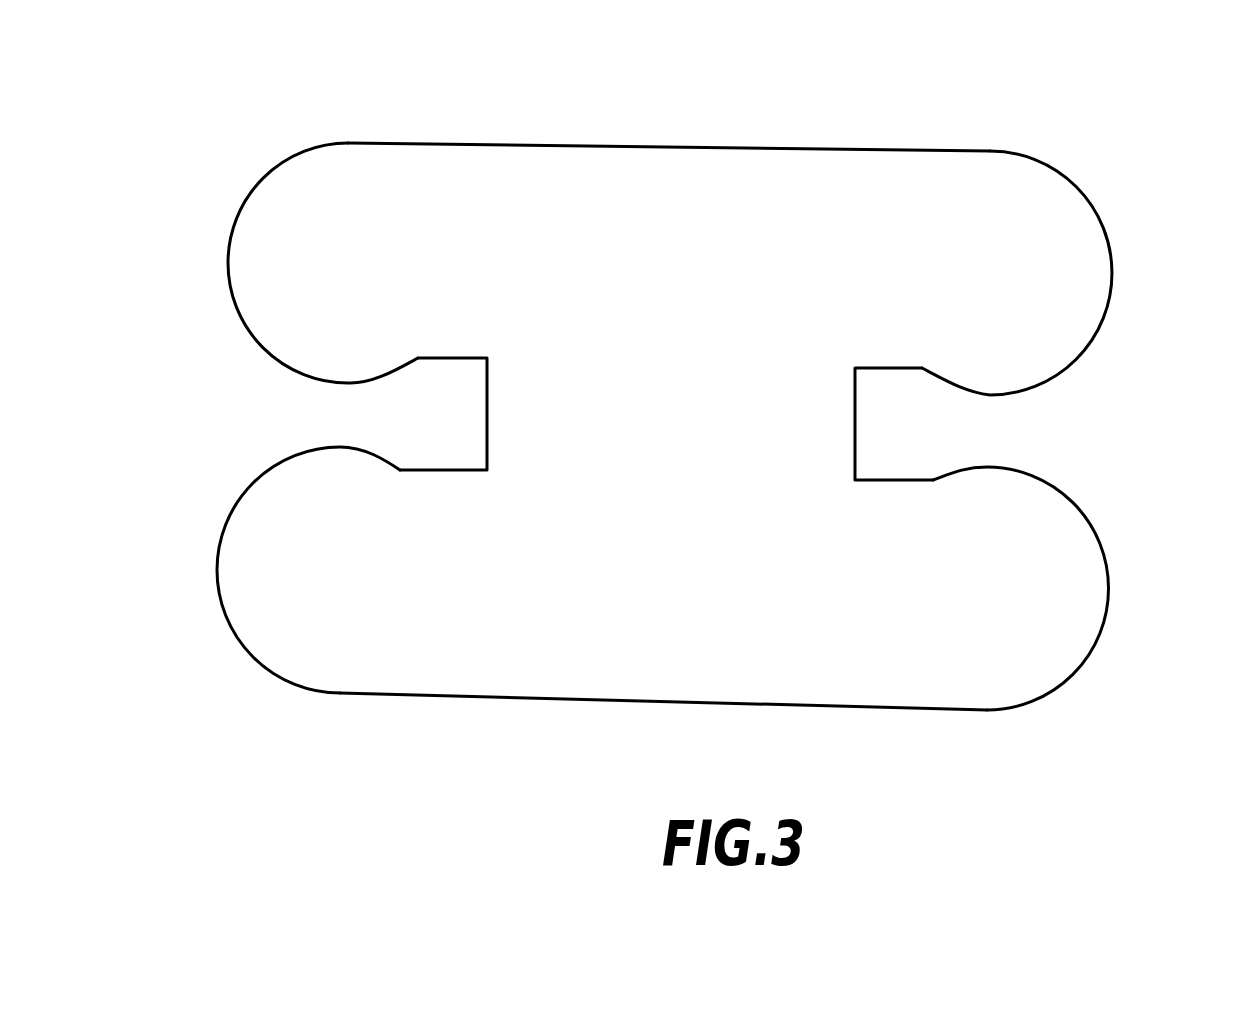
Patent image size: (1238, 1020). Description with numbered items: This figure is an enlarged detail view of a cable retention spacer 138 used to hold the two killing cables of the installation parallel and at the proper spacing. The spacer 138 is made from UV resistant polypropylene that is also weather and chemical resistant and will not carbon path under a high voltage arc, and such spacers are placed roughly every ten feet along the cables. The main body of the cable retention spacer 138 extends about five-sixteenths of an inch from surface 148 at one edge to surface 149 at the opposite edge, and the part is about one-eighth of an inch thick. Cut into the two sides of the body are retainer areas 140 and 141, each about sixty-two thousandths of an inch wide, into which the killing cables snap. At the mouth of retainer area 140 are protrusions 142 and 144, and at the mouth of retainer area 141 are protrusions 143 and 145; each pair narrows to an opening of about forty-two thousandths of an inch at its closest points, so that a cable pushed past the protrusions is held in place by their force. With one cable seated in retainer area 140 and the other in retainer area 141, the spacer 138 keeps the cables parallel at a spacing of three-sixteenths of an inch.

The cable retention spacer 138 is at (653, 415).
The retainer area 140 is at (433, 425).
The retainer area 141 is at (885, 433).
The protrusion 142 is at (330, 383).
The protrusion 143 is at (987, 397).
The protrusion 144 is at (332, 443).
The protrusion 145 is at (1008, 462).
The surface 148 is at (423, 138).
The surface 149 is at (390, 695).